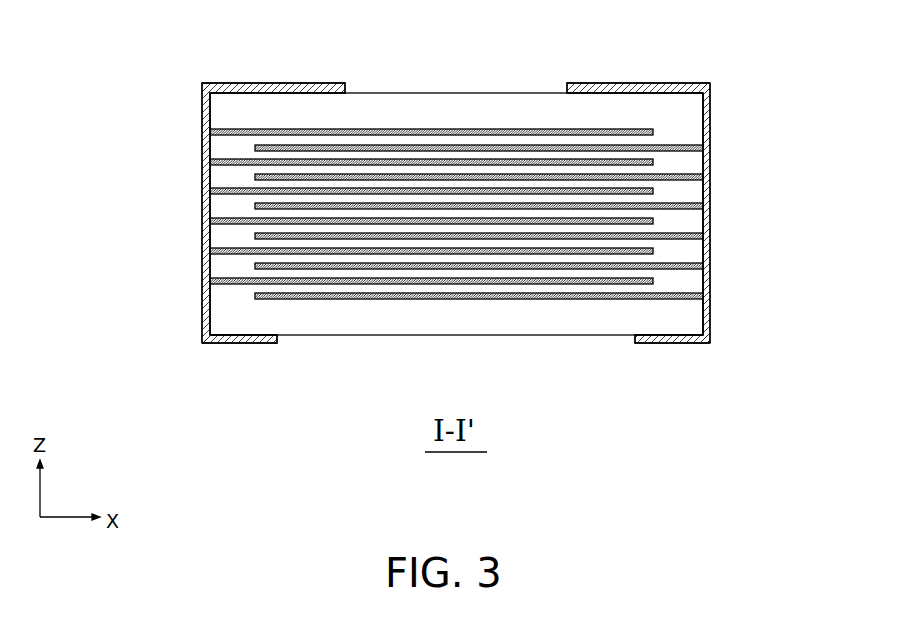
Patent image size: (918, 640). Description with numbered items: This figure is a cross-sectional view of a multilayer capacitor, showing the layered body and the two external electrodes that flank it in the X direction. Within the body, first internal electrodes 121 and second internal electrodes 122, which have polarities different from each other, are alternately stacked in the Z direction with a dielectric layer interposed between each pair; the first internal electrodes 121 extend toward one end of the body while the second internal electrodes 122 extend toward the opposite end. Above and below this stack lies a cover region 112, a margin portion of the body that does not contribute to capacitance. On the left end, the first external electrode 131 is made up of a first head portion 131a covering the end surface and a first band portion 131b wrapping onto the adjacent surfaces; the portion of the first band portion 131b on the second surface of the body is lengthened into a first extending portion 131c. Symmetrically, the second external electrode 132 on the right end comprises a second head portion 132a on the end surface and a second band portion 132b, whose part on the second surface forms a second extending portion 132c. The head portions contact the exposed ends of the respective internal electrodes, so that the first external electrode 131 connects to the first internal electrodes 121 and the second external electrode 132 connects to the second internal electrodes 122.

The cover region 112 is at (447, 110).
The first internal electrode 121 is at (373, 129).
The second internal electrode 122 is at (518, 145).
The first external electrode 131 is at (198, 207).
The first head portion 131a is at (201, 235).
The first band portion 131b is at (240, 343).
The first extending portion 131c is at (227, 64).
The second external electrode 132 is at (717, 207).
The second head portion 132a is at (710, 236).
The second band portion 132b is at (675, 343).
The second extending portion 132c is at (684, 64).